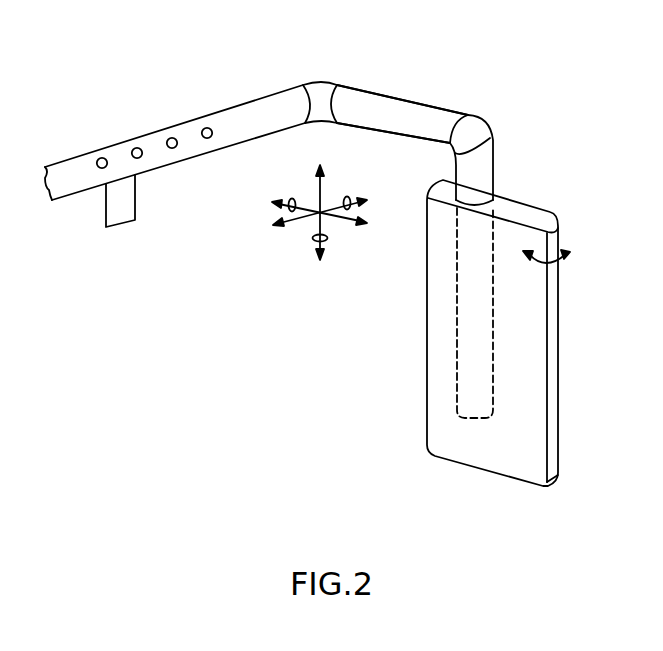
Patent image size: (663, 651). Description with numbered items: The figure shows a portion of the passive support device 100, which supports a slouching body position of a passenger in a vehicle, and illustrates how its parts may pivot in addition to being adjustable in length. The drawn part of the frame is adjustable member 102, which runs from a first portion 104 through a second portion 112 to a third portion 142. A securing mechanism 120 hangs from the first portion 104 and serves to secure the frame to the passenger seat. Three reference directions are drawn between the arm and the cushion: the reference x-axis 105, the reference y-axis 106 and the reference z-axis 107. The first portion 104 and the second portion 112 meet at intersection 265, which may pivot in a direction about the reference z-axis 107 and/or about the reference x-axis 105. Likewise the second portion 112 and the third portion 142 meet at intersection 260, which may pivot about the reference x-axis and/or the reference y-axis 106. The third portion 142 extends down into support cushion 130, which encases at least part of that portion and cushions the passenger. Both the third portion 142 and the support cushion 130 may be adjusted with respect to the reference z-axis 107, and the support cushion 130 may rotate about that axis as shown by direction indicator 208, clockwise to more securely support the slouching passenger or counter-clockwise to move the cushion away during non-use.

The support device 100 is at (256, 135).
The adjustable member 102 is at (248, 103).
The first portion 104 is at (195, 168).
The reference x-axis 105 is at (332, 208).
The reference y-axis 106 is at (293, 222).
The reference z-axis 107 is at (326, 246).
The second portion 112 is at (415, 92).
The securing mechanism 120 is at (106, 212).
The support cushion 130 is at (533, 448).
The third portion 142 is at (473, 352).
The direction indicator 208 is at (570, 258).
The intersection 260 is at (497, 113).
The intersection 265 is at (322, 81).